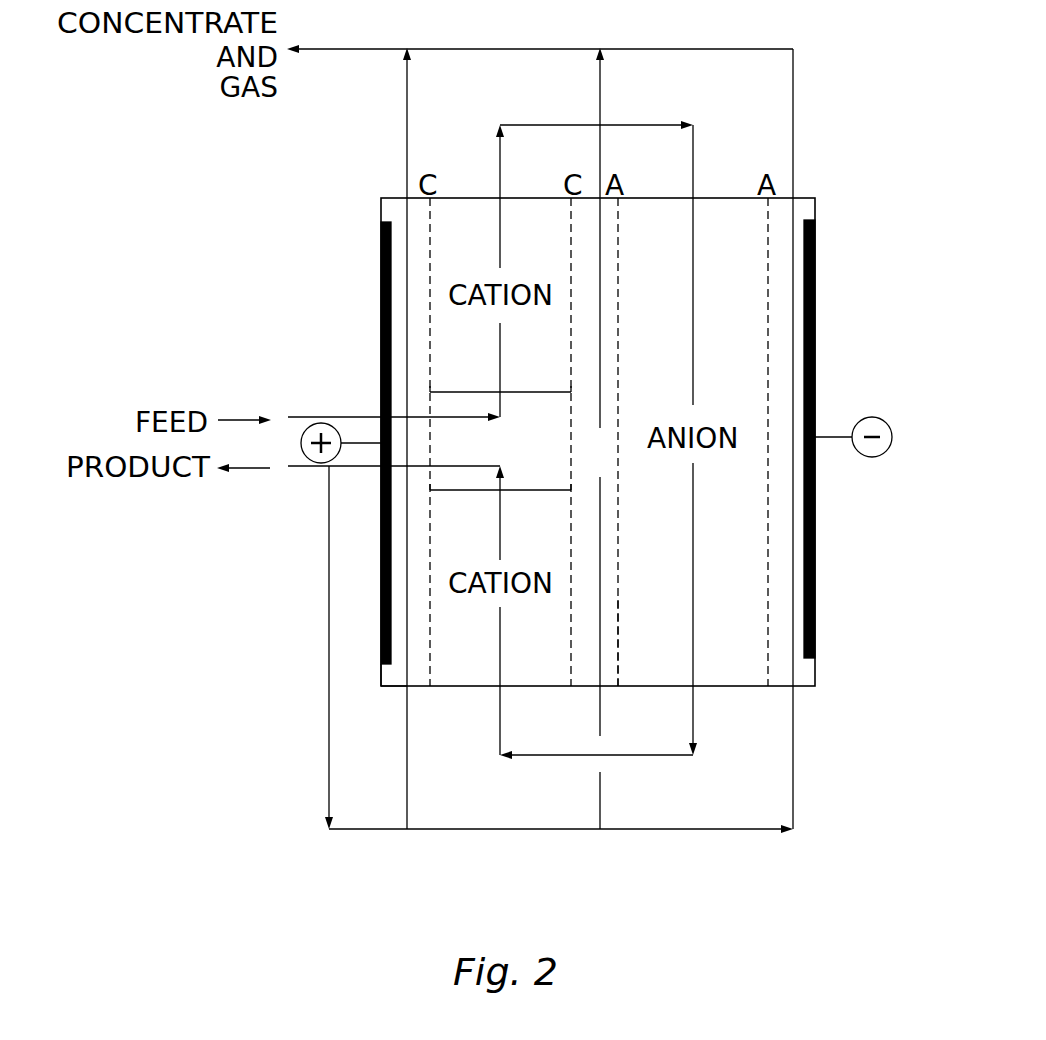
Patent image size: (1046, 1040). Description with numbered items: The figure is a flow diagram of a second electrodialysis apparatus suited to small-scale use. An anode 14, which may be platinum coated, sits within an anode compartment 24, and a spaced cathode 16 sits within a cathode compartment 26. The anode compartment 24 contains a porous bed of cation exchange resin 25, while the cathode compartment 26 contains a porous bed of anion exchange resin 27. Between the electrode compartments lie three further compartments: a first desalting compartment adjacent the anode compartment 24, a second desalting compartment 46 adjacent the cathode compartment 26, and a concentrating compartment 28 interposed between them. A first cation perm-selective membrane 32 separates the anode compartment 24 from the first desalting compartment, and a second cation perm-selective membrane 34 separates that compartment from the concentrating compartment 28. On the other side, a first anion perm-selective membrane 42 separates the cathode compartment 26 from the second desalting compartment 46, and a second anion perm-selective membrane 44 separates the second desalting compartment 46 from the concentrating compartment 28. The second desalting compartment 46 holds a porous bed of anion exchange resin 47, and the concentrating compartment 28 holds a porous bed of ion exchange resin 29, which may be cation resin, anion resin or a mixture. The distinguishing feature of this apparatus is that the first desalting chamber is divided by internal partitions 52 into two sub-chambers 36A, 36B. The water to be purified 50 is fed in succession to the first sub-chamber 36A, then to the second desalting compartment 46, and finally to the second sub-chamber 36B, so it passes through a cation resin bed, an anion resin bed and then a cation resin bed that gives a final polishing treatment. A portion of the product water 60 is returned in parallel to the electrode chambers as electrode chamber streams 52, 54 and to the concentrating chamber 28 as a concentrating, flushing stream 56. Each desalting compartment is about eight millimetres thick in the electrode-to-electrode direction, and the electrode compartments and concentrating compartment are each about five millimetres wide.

The anode 14 is at (385, 600).
The cathode 16 is at (810, 402).
The anode compartment 24 is at (407, 353).
The porous bed of cation exchange resin 25 is at (400, 673).
The cathode compartment 26 is at (783, 362).
The porous bed of anion exchange resin 27 is at (800, 575).
The concentrating compartment 28 is at (613, 462).
The porous bed of ion exchange resin 29 is at (612, 655).
The first cation perm-selective membrane 32 is at (430, 268).
The second cation perm-selective membrane 34 is at (571, 227).
The first sub-chamber 36A is at (566, 380).
The second sub-chamber 36B is at (566, 541).
The first anion perm-selective membrane 42 is at (775, 205).
The second anion perm-selective membrane 44 is at (618, 262).
The second desalting compartment 46 is at (688, 345).
The porous bed of anion exchange resin 47 is at (717, 653).
The water to be purified 50 is at (322, 415).
The internal partitions 52 is at (528, 392).
The electrode chamber stream 54 is at (795, 770).
The concentrating, flushing stream 56 is at (602, 783).
The product water 60 is at (313, 468).